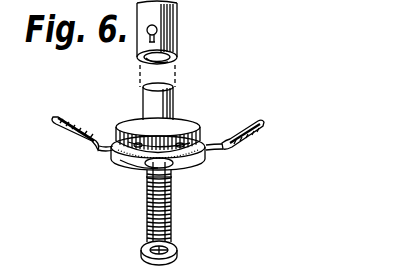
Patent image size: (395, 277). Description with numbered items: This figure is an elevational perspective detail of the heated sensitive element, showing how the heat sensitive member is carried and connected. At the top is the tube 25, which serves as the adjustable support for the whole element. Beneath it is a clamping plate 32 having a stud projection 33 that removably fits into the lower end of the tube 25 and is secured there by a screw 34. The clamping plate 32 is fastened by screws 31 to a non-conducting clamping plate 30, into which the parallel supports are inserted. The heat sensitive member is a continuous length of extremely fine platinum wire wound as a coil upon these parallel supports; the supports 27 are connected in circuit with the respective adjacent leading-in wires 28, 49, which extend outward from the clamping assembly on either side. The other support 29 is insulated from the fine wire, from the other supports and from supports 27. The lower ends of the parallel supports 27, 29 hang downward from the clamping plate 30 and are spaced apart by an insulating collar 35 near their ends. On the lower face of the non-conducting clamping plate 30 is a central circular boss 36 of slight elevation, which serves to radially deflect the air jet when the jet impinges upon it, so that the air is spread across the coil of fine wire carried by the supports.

The tube 25 is at (145, 42).
The parallel supports 27 is at (147, 183).
The leading-in wire 28 is at (218, 150).
The other support 29 is at (147, 179).
The non-conducting clamping plate 30 is at (200, 136).
The screws 31 is at (132, 143).
The clamping plate 32 is at (184, 131).
The stud projection 33 is at (148, 101).
The screw 34 is at (158, 31).
The insulating collar 35 is at (176, 242).
The central circular boss 36 is at (126, 165).
The leading-in wire 49 is at (112, 148).